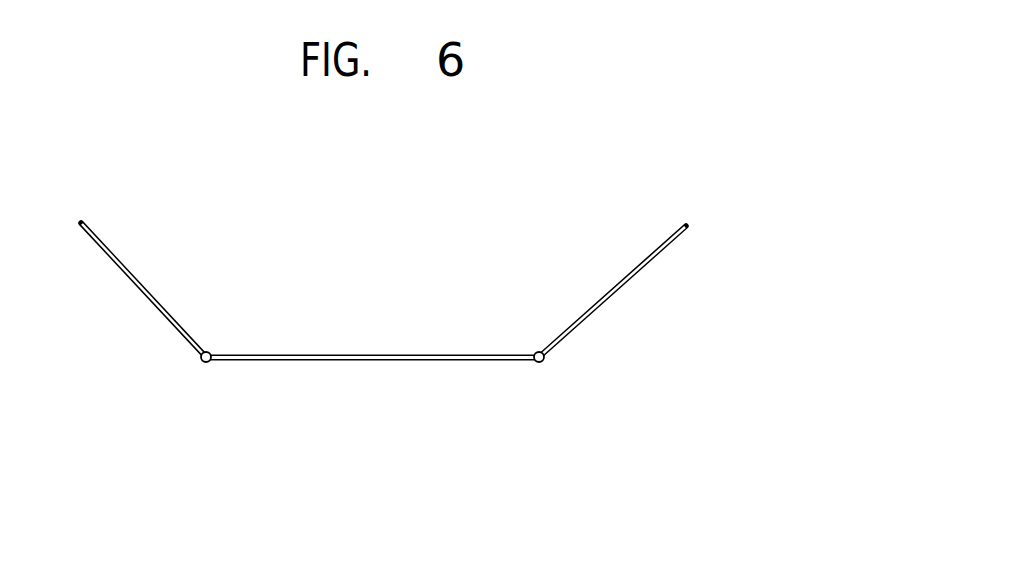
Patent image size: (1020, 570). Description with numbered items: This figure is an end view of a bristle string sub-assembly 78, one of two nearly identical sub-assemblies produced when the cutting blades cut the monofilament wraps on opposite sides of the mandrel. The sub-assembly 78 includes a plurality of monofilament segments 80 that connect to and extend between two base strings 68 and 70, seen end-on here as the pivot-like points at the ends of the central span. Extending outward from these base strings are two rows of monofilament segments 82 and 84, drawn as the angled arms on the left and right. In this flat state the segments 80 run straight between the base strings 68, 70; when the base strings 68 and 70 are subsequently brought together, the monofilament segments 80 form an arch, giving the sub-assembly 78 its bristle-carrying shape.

The base string 68 is at (201, 364).
The base string 70 is at (543, 365).
The bristle string sub-assembly 78 is at (737, 313).
The monofilament segments 80 is at (353, 354).
The row of monofilament segments 82 is at (132, 271).
The row of monofilament segments 84 is at (610, 287).